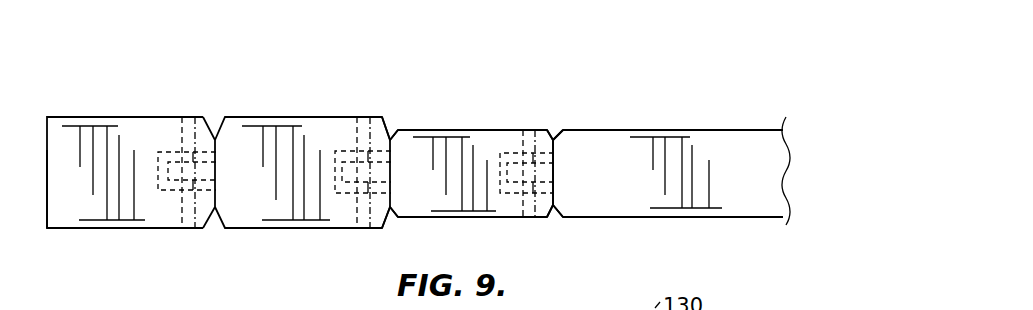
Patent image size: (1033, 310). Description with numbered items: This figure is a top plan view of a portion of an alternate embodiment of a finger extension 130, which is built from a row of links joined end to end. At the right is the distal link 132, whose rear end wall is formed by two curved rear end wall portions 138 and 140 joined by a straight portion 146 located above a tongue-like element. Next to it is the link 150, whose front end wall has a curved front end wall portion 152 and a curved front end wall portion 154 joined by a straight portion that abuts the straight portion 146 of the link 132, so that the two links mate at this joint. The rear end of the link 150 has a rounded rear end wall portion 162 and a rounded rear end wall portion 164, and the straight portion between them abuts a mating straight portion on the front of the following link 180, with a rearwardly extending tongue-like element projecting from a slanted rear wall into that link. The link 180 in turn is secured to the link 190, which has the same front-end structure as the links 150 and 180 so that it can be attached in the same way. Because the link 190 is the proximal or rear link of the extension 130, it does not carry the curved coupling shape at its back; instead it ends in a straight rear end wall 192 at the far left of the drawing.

The extension 130 is at (648, 97).
The link 132 is at (688, 128).
The curved rear end wall portion 138 is at (556, 137).
The curved rear end wall portion 140 is at (558, 218).
The straight portion 146 is at (556, 168).
The link 150 is at (460, 120).
The curved front end wall portion 152 is at (553, 138).
The curved front end wall portion 154 is at (553, 208).
The rounded rear end wall portion 162 is at (390, 138).
The rounded rear end wall portion 164 is at (391, 208).
The link 180 is at (302, 108).
The link 190 is at (142, 108).
The straight rear end wall 192 is at (47, 192).